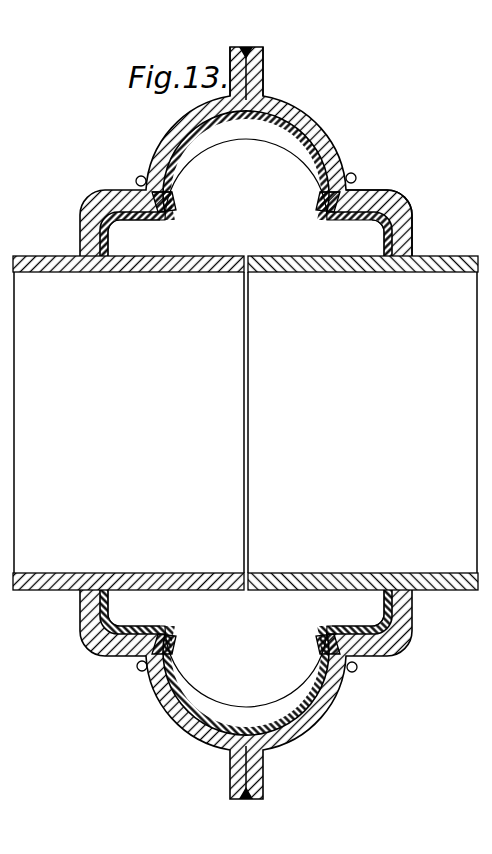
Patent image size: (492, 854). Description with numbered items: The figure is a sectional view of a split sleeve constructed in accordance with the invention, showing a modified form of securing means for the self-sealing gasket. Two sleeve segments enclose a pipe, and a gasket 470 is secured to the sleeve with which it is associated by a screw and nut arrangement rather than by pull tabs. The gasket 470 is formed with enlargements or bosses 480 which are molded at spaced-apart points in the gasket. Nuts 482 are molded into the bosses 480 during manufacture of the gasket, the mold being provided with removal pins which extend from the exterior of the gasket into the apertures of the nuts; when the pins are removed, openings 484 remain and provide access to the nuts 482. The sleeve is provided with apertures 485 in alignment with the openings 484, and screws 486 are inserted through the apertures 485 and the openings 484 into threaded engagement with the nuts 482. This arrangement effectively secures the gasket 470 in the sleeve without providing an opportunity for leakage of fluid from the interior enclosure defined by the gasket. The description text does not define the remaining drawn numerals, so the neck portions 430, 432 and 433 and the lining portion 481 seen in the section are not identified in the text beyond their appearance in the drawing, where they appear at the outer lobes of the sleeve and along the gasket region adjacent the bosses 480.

The neck of upper dome 430 is at (229, 66).
The weld seam at neck top 433 is at (246, 49).
The neck wall 432 is at (264, 64).
The gasket 470 is at (268, 124).
The screws 486 is at (136, 181).
The nuts 482 is at (172, 196).
The bosses 480 is at (172, 205).
The collar lining 481 is at (153, 214).
The apertures 485 is at (378, 192).
The openings 484 is at (326, 200).